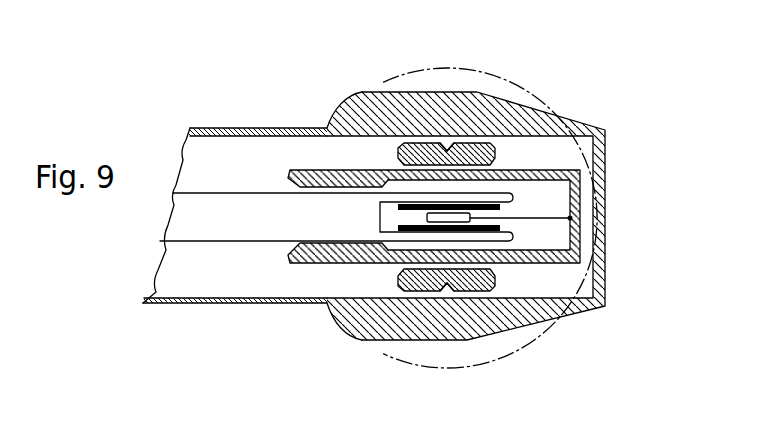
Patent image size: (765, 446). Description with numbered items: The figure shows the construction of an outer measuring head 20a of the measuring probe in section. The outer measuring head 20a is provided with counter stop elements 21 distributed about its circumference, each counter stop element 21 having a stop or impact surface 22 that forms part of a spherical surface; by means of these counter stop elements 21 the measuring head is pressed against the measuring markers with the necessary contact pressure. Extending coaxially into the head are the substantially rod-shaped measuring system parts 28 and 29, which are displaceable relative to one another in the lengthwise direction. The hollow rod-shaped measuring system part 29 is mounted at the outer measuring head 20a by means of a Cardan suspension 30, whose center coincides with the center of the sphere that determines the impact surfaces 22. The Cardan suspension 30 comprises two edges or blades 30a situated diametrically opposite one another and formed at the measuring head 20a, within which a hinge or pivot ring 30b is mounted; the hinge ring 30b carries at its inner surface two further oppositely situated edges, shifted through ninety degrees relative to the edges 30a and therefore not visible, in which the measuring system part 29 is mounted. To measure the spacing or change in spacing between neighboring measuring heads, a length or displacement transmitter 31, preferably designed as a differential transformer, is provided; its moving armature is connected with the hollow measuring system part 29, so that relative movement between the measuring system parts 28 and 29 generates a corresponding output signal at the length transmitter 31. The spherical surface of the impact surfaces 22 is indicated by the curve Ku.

The outer measuring head 20a is at (404, 219).
The counter stop element 21 is at (372, 107).
The impact surface 22 is at (343, 120).
The rod-shaped measuring system part 28 is at (207, 193).
The hollow rod-shaped measuring system part 29 is at (305, 263).
The Cardan suspension 30 is at (516, 157).
The edges 30a is at (447, 143).
The hinge ring 30b is at (413, 152).
The length transmitter 31 is at (465, 230).
The spherical surface Ku is at (530, 92).